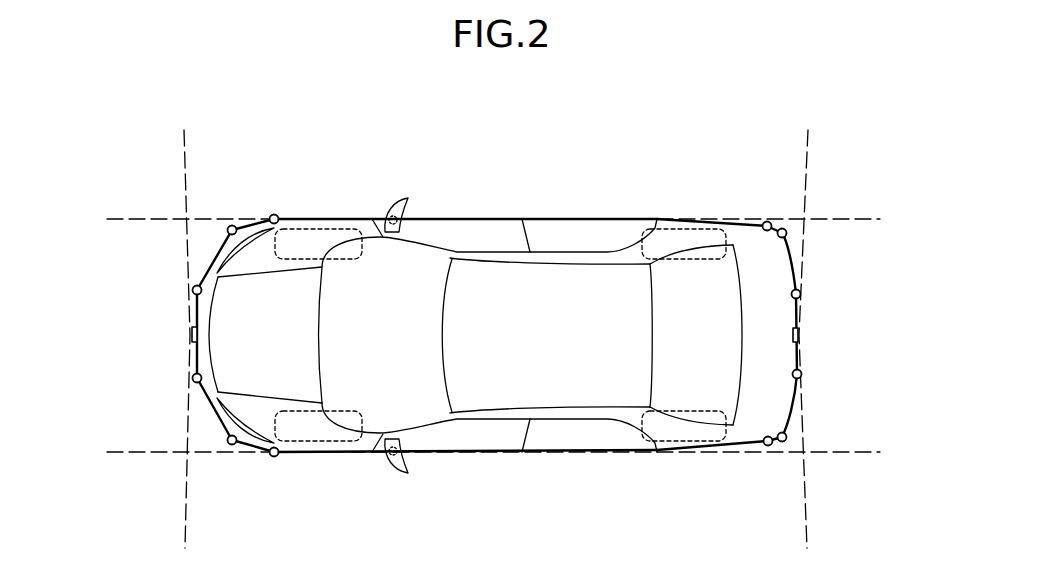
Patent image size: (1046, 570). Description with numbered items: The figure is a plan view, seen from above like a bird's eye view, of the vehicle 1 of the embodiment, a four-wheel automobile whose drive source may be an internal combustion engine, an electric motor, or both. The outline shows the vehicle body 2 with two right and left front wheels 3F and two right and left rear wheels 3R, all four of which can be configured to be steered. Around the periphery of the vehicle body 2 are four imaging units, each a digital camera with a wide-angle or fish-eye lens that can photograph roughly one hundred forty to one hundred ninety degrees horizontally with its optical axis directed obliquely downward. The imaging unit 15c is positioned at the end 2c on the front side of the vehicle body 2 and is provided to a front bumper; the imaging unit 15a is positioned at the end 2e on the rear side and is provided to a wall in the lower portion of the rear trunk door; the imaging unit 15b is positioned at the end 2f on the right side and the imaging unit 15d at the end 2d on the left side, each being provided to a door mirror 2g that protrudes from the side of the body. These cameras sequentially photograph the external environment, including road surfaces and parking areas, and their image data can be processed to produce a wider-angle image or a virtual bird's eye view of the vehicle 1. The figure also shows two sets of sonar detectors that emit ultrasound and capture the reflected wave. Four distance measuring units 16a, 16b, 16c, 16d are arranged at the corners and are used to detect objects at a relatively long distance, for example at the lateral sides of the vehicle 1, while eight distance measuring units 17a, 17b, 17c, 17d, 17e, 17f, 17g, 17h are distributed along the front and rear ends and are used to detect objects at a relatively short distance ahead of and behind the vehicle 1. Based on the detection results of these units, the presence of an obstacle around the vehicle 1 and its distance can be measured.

The vehicle 1 is at (603, 141).
The vehicle body 2 is at (750, 219).
The end on the front side of the vehicle body 2c is at (193, 351).
The end on the left side of the vehicle body 2d is at (590, 454).
The end on the rear side of the vehicle body 2e is at (803, 353).
The end on the right side of the vehicle body 2f is at (600, 217).
The door mirror 2g is at (410, 199).
The front wheels 3F is at (317, 230).
The rear wheels 3R is at (682, 228).
The imaging unit 15a is at (801, 333).
The imaging unit 15b is at (392, 215).
The imaging unit 15c is at (191, 333).
The imaging unit 15d is at (392, 458).
The distance measuring unit 16a is at (768, 447).
The distance measuring unit 16b is at (768, 221).
The distance measuring unit 16c is at (271, 214).
The distance measuring unit 16d is at (272, 457).
The distance measuring unit 17a is at (786, 435).
The distance measuring unit 17b is at (800, 377).
The distance measuring unit 17c is at (800, 292).
The distance measuring unit 17d is at (786, 229).
The distance measuring unit 17e is at (228, 231).
The distance measuring unit 17f is at (194, 290).
The distance measuring unit 17g is at (194, 378).
The distance measuring unit 17h is at (228, 439).